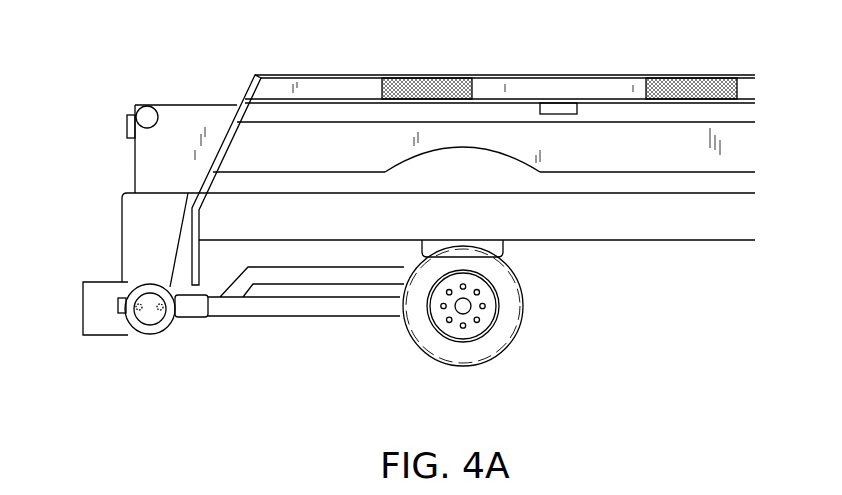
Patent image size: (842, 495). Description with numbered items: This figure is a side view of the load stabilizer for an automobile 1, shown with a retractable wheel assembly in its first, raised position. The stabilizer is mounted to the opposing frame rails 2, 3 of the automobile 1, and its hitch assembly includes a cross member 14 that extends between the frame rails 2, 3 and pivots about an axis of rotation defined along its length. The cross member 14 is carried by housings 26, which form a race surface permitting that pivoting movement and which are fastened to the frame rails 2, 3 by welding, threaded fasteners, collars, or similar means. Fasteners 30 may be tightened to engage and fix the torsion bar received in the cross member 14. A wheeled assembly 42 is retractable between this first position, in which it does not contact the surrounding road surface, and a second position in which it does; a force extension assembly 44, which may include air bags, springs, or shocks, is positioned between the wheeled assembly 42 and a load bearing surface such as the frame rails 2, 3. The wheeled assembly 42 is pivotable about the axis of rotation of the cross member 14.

The automobile 1 is at (603, 87).
The frame rail 2 is at (273, 147).
The frame rail 3 is at (650, 218).
The cross member 14 is at (140, 322).
The housing 26 is at (130, 290).
The fasteners 30 is at (160, 313).
The wheeled assembly 42 is at (530, 360).
The force extension assembly 44 is at (515, 257).